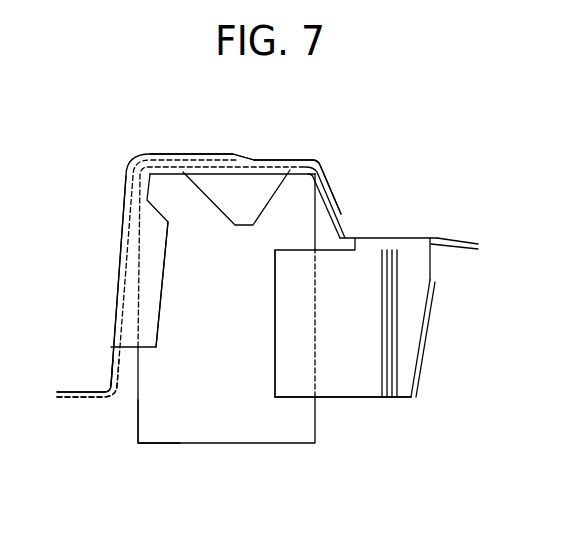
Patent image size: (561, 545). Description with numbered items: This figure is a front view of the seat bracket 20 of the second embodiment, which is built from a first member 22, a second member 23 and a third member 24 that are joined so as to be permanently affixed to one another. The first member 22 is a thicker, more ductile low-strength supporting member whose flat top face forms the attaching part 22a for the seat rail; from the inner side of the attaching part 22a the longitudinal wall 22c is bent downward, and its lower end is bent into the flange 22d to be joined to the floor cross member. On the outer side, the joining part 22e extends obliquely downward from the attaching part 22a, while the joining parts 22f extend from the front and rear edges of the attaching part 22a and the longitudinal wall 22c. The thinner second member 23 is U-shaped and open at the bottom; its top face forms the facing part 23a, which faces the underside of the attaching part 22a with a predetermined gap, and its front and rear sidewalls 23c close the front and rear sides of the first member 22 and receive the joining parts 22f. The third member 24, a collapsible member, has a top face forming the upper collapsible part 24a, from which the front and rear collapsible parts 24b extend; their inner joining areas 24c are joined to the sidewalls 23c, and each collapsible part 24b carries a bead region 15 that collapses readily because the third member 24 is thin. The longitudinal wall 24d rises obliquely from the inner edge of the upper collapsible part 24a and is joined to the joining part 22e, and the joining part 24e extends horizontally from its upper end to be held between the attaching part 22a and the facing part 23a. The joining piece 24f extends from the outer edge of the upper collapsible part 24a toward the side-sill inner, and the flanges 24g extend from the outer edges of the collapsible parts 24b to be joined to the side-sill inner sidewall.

The bead region 15 is at (381, 317).
The seat bracket 20 is at (409, 156).
The first member 22 is at (108, 195).
The attaching part 22a is at (183, 153).
The longitudinal wall 22c is at (119, 245).
The flange 22d is at (81, 388).
The joining part 22e is at (333, 177).
The joining parts 22f is at (239, 220).
The second member 23 is at (257, 452).
The facing part 23a is at (231, 153).
The front and rear sidewalls 23c is at (153, 413).
The third member 24 is at (399, 410).
The upper collapsible part 24a is at (409, 237).
The front and rear collapsible parts 24b is at (367, 393).
The joining areas 24c is at (296, 395).
The longitudinal wall 24d is at (343, 230).
The joining part 24e is at (281, 158).
The joining piece 24f is at (465, 240).
The flanges 24g is at (428, 338).